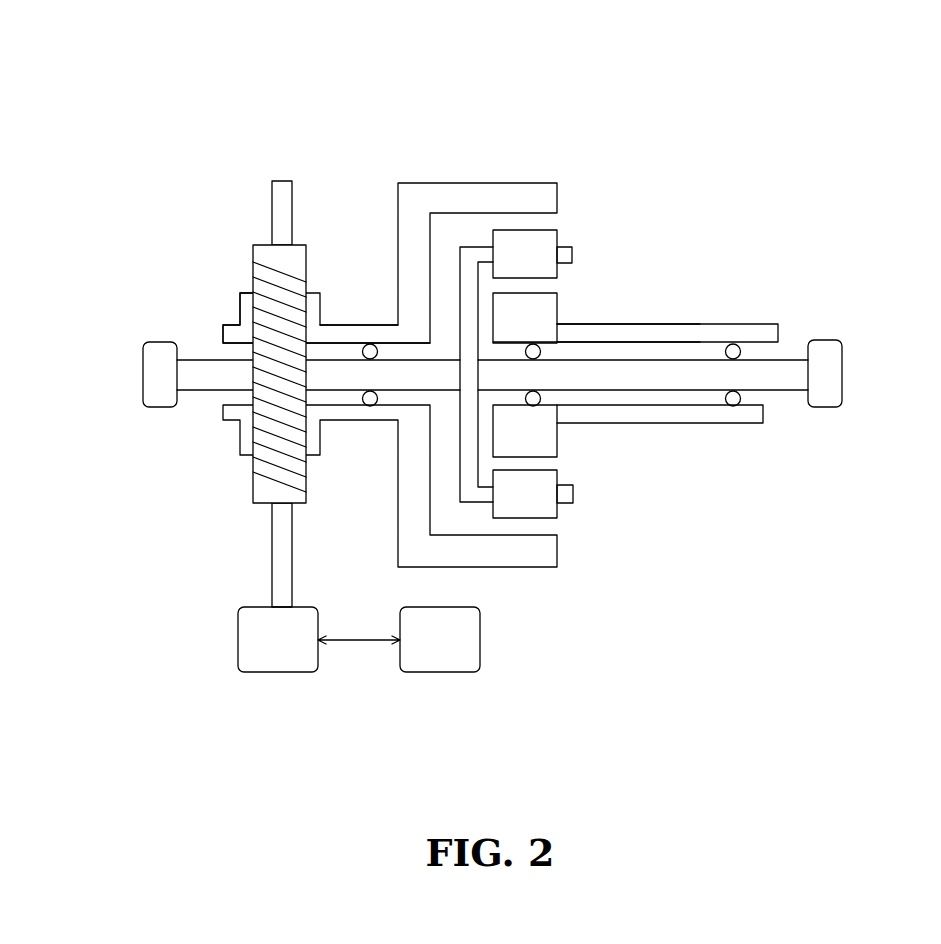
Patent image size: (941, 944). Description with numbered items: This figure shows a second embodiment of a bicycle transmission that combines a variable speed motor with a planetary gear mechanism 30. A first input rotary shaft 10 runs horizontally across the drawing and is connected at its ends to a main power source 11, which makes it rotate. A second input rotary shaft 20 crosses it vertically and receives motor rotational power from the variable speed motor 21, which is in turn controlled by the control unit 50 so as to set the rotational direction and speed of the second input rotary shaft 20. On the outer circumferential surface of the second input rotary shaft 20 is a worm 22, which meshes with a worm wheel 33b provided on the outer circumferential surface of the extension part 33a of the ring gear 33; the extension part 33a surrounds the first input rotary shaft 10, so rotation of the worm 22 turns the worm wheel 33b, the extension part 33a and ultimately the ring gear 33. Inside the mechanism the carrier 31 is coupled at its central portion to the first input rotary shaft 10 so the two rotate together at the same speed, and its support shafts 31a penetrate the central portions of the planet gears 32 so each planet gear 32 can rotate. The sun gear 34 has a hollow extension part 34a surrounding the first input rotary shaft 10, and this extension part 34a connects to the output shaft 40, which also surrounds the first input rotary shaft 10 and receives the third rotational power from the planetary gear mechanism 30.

The first input rotary shaft 10 is at (782, 378).
The main power source 11 is at (153, 373).
The second input rotary shaft 20 is at (277, 197).
The variable speed motor 21 is at (288, 653).
The worm 22 is at (268, 463).
The planetary gear mechanism 30 is at (826, 143).
The carrier 31 is at (467, 460).
The support shafts 31a is at (563, 492).
The planet gear 32 is at (530, 250).
The ring gear 33 is at (498, 193).
The extension part 33a is at (357, 333).
The worm wheel 33b is at (240, 307).
The sun gear 34 is at (535, 310).
The extension part 34a is at (605, 333).
The output shaft 40 is at (748, 333).
The control unit 50 is at (435, 652).